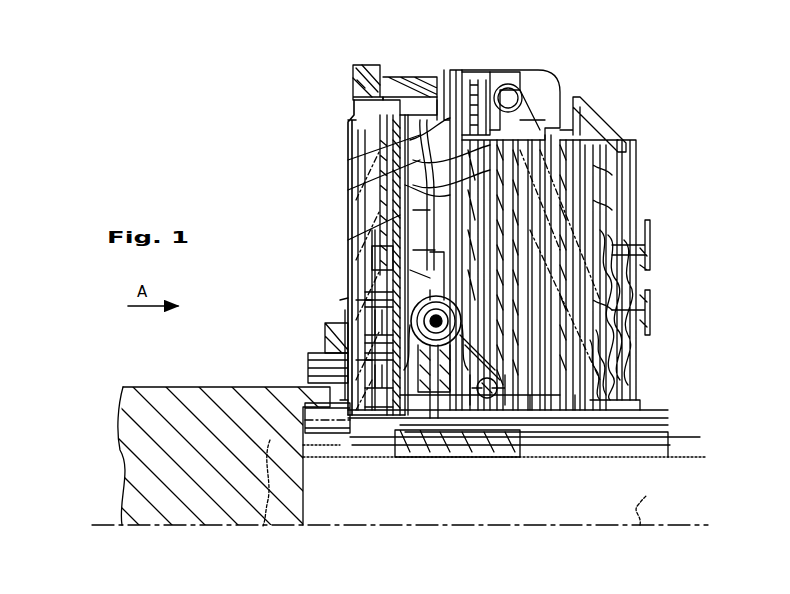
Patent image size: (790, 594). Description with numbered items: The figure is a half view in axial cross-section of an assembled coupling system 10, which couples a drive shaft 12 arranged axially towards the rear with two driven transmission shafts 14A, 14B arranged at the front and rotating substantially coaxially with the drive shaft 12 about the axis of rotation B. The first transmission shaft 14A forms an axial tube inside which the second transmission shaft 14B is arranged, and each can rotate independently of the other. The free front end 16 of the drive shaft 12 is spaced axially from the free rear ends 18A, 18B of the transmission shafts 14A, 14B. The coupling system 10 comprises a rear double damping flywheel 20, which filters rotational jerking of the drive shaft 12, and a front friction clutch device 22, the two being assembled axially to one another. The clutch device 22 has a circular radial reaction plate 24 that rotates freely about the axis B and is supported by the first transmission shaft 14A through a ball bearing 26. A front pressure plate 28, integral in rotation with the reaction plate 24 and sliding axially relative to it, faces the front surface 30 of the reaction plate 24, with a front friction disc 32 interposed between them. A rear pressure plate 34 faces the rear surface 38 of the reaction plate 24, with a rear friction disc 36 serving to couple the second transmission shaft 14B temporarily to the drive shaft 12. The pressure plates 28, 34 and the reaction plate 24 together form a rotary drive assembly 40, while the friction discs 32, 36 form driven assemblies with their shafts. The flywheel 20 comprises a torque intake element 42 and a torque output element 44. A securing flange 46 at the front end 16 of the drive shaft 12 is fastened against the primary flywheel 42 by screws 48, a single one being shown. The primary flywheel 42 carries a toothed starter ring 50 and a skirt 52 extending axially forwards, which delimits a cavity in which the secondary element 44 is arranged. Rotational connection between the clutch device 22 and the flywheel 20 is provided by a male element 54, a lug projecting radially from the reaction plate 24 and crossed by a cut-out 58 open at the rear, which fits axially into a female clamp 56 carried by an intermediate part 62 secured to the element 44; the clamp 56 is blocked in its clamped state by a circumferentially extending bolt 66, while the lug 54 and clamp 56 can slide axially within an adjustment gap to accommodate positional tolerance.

The coupling system 10 is at (521, 52).
The drive shaft 12 is at (186, 412).
The first transmission shaft 14A is at (656, 412).
The second transmission shaft 14B is at (656, 440).
The free front end of the drive shaft 16 is at (305, 492).
The free rear end of the first transmission shaft 18A is at (431, 462).
The free rear end of the second transmission shaft 18B is at (257, 504).
The flywheel 20 is at (383, 52).
The friction clutch device 22 is at (541, 70).
The reaction plate 24 is at (628, 245).
The ball bearing 26 is at (487, 432).
The front pressure plate 28 is at (616, 180).
The front surface of the reaction plate 30 is at (590, 216).
The front friction disc 32 is at (620, 148).
The rear pressure plate 34 is at (358, 228).
The rear friction disc 36 is at (380, 196).
The rear surface of the reaction plate 38 is at (376, 168).
The rotary drive assembly 40 is at (600, 112).
The torque intake element 42 is at (350, 300).
The torque output element 44 is at (346, 150).
The securing flange 46 is at (325, 340).
The screw 48 is at (308, 370).
The toothed starter ring 50 is at (364, 92).
The skirt 52 is at (406, 74).
The male element 54 is at (495, 70).
The female element 56 is at (450, 68).
The cut-out 58 is at (477, 82).
The intermediate part 62 is at (372, 250).
The bolt 66 is at (545, 95).
The axis of rotation B is at (643, 501).